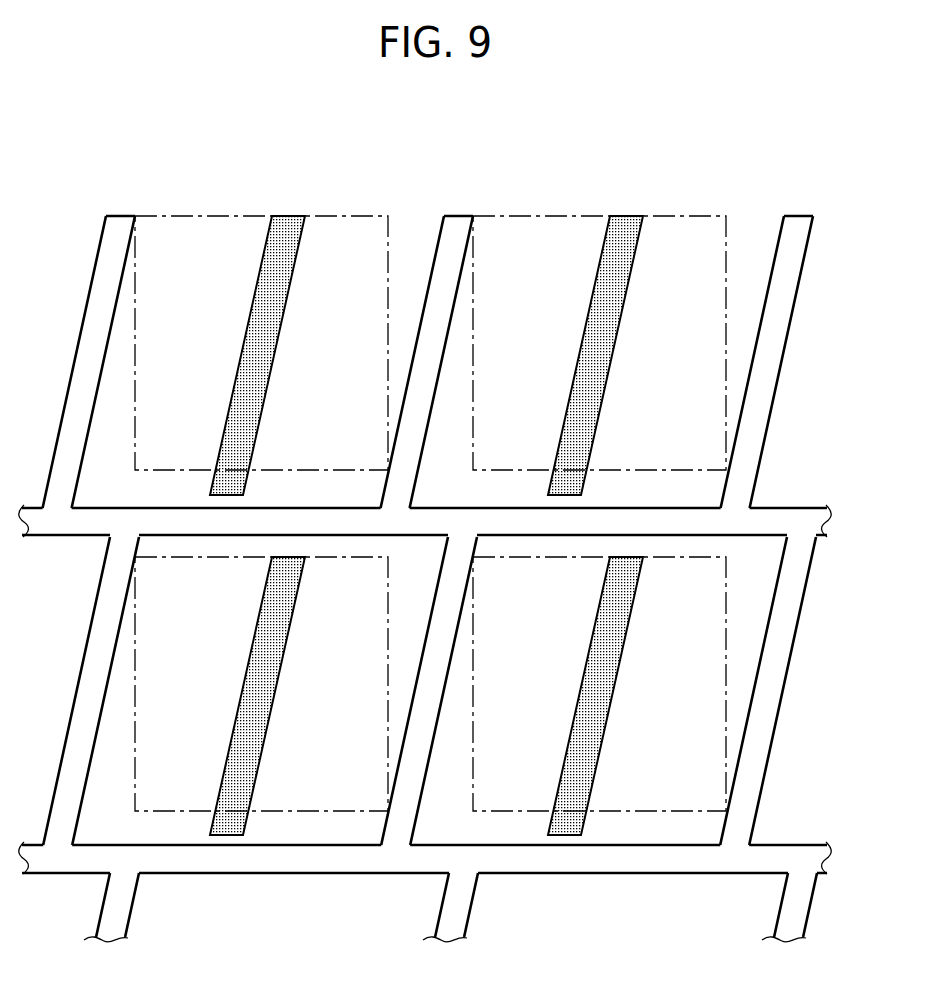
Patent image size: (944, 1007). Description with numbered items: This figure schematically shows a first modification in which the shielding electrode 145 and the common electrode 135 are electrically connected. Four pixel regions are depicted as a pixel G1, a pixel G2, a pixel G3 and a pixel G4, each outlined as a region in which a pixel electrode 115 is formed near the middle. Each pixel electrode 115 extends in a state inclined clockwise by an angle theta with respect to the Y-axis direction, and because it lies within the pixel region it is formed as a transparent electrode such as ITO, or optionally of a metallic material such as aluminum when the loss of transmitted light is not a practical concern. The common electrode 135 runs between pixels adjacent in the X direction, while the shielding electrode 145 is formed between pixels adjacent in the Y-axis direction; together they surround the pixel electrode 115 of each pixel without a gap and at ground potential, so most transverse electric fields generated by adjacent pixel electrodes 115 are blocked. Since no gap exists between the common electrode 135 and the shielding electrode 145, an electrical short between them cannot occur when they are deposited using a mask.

The pixel electrode 115 is at (268, 332).
The common electrode 135 is at (110, 281).
The shielding electrode 145 is at (283, 520).
The pixel G1 is at (357, 213).
The pixel G2 is at (685, 213).
The pixel G3 is at (347, 812).
The pixel G4 is at (685, 812).